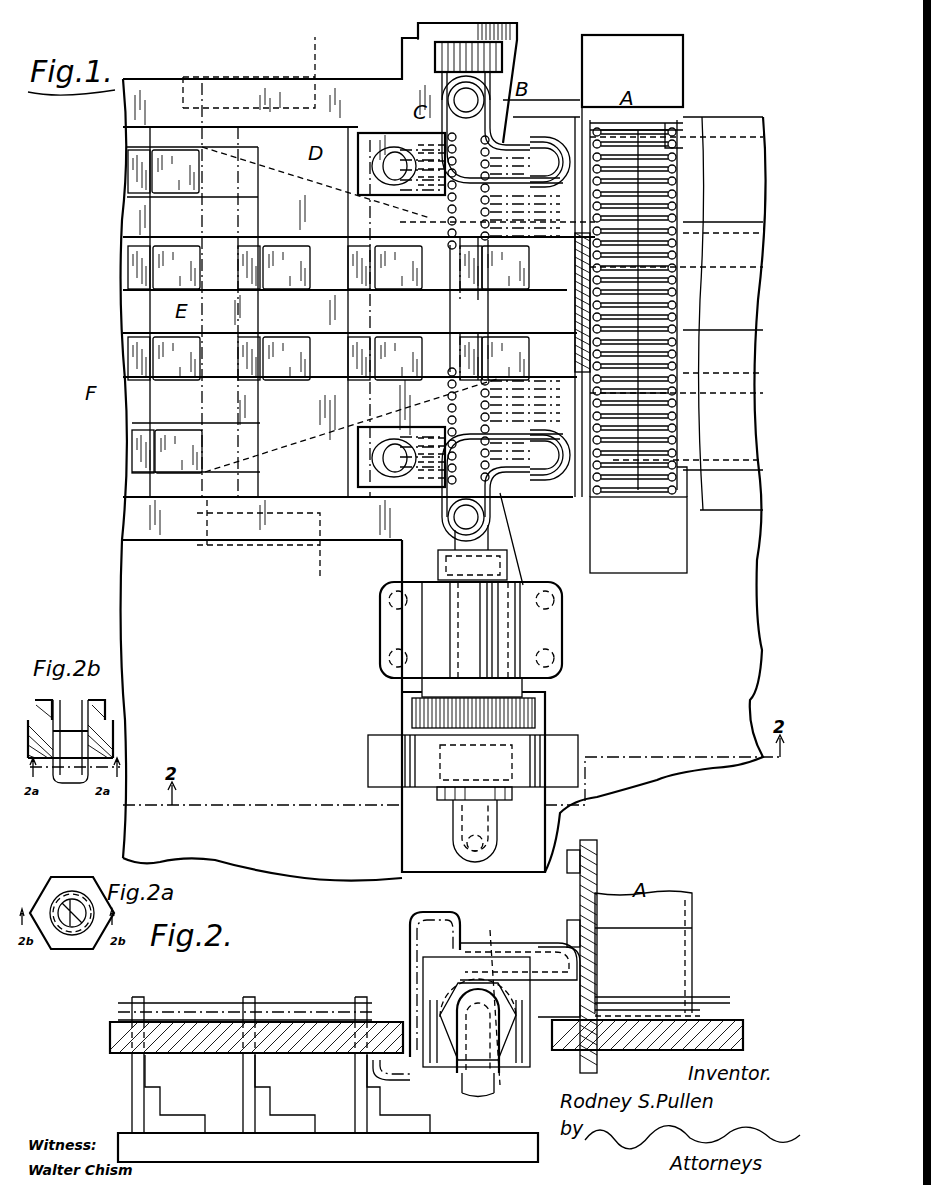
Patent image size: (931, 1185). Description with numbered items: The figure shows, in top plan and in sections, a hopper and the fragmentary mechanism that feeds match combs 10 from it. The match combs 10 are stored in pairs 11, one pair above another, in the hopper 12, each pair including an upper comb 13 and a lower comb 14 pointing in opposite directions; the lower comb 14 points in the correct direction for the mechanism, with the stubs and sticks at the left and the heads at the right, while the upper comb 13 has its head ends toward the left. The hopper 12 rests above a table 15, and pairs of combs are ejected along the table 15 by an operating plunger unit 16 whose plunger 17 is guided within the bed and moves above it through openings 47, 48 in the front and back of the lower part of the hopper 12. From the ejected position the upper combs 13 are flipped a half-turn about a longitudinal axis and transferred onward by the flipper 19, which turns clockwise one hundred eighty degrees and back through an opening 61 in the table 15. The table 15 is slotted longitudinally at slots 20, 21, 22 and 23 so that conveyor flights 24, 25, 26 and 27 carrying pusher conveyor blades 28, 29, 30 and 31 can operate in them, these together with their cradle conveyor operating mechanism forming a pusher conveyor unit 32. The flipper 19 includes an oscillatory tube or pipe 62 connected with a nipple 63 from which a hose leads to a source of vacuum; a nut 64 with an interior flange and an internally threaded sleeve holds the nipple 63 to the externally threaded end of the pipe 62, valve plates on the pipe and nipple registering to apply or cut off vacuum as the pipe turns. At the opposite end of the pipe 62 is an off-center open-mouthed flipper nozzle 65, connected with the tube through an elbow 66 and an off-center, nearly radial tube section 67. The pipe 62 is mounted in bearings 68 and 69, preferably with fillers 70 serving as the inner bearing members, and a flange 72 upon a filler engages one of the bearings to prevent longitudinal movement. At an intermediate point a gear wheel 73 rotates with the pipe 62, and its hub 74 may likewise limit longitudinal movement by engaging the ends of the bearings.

In FIG. 1, the match combs 10 is at (650, 135).
In FIG. 2, the match combs 10 is at (672, 1000).
In FIG. 1, the pairs 11 is at (640, 487).
In FIG. 2, the pairs 11 is at (610, 1000).
In FIG. 1, the hopper 12 is at (690, 135).
In FIG. 2, the hopper 12 is at (684, 905).
In FIG. 1, the upper comb 13 is at (598, 492).
In FIG. 2, the upper comb 13 is at (632, 1000).
In FIG. 1, the lower comb 14 is at (674, 462).
In FIG. 2, the lower comb 14 is at (619, 957).
In FIG. 1, the table 15 is at (735, 480).
In FIG. 2, the table 15 is at (745, 1019).
In FIG. 1, the operating plunger unit 16 is at (698, 418).
In FIG. 2, the operating plunger unit 16 is at (730, 1002).
In FIG. 1, the plunger 17 is at (695, 362).
In FIG. 2, the plunger 17 is at (697, 998).
In FIG. 1, the flipper 19 is at (530, 130).
In FIG. 2, the flipper 19 is at (535, 955).
In FIG. 1, the slot 20 is at (222, 190).
In FIG. 1, the slot 21 is at (228, 290).
In FIG. 1, the slot 22 is at (225, 359).
In FIG. 1, the slot 23 is at (205, 472).
In FIG. 1, the conveyor flight 24 is at (175, 171).
In FIG. 1, the conveyor flight 25 is at (341, 267).
In FIG. 1, the conveyor flight 26 is at (341, 358).
In FIG. 1, the conveyor flight 27 is at (178, 451).
In FIG. 2, the conveyor flight 27 is at (148, 1118).
In FIG. 1, the pusher conveyor blade 28 is at (128, 170).
In FIG. 1, the pusher conveyor blade 29 is at (128, 262).
In FIG. 1, the pusher conveyor blade 30 is at (128, 355).
In FIG. 1, the pusher conveyor blade 31 is at (132, 452).
In FIG. 2, the pusher conveyor blade 31 is at (138, 997).
In FIG. 2, the pusher conveyor unit 32 is at (222, 1138).
In FIG. 2, the opening 47 is at (600, 1000).
In FIG. 2, the opening 48 is at (665, 1012).
In FIG. 1, the opening 61 is at (363, 137).
In FIG. 2B, the opening 61 is at (86, 738).
In FIG. 2, the opening 61 is at (372, 1055).
In FIG. 1, the oscillatory tube or pipe 62 is at (510, 758).
In FIG. 2B, the oscillatory tube or pipe 62 is at (65, 719).
In FIG. 2A, the oscillatory tube or pipe 62 is at (95, 888).
In FIG. 2, the oscillatory tube or pipe 62 is at (748, 1018).
In FIG. 1, the nipple 63 is at (485, 818).
In FIG. 2B, the nipple 63 is at (86, 800).
In FIG. 2A, the nipple 63 is at (52, 895).
In FIG. 2, the nipple 63 is at (468, 1062).
In FIG. 1, the nut 64 is at (500, 797).
In FIG. 2B, the nut 64 is at (110, 769).
In FIG. 2A, the nut 64 is at (85, 890).
In FIG. 2, the nut 64 is at (455, 968).
In FIG. 1, the flipper nozzle 65 is at (452, 516).
In FIG. 2B, the flipper nozzle 65 is at (55, 785).
In FIG. 2A, the flipper nozzle 65 is at (58, 935).
In FIG. 2, the flipper nozzle 65 is at (468, 912).
In FIG. 1, the elbow 66 is at (470, 482).
In FIG. 1, the tube section 67 is at (508, 535).
In FIG. 2, the tube section 67 is at (490, 997).
In FIG. 1, the bearing 68 is at (510, 628).
In FIG. 1, the bearing 69 is at (430, 762).
In FIG. 1, the filler 70 is at (445, 605).
In FIG. 1, the flange 72 is at (530, 770).
In FIG. 2, the flange 72 is at (410, 937).
In FIG. 1, the gear wheel 73 is at (520, 708).
In FIG. 2, the gear wheel 73 is at (500, 1068).
In FIG. 1, the hub 74 is at (470, 690).